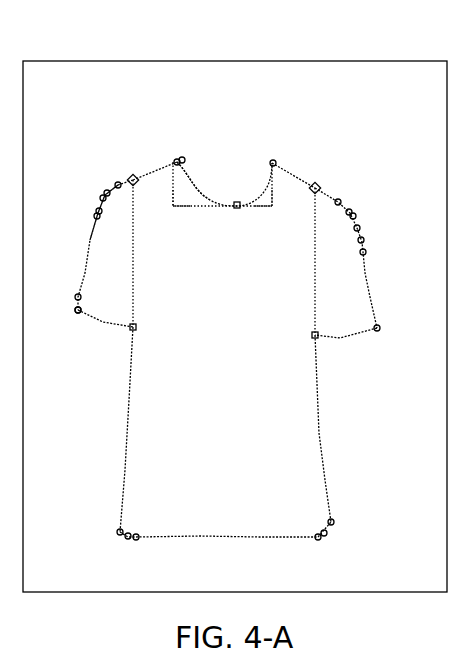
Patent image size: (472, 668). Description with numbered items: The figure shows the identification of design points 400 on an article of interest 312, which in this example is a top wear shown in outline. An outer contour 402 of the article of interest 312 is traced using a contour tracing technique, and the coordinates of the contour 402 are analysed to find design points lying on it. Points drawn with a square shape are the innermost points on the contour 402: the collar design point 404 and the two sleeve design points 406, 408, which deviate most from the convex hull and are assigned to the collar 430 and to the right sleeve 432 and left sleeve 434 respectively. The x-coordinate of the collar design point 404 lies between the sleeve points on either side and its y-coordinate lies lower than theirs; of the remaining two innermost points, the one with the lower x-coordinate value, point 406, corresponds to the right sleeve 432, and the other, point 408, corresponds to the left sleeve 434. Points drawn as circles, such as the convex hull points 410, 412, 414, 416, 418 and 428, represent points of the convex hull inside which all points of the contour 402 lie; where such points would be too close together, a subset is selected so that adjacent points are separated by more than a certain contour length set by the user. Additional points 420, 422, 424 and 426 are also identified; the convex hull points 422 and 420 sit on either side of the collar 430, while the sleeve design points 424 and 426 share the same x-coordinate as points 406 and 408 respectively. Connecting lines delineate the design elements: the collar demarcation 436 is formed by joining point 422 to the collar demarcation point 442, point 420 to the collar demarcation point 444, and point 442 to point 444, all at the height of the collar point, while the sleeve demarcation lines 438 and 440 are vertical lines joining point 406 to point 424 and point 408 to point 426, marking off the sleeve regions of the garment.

The design points 400 is at (303, 48).
The outer contour 402 is at (75, 278).
The collar design point 404 is at (237, 208).
The right sleeve design point 406 is at (135, 329).
The left sleeve design point 408 is at (313, 345).
The convex hull point 410 is at (380, 330).
The convex hull point 412 is at (365, 252).
The convex hull point 414 is at (97, 212).
The convex hull point 416 is at (76, 310).
The convex hull point 418 is at (117, 531).
The convex hull point beside collar 420 is at (176, 160).
The convex hull point beside collar 422 is at (273, 160).
The sleeve design point 424 is at (132, 179).
The sleeve design point 426 is at (317, 187).
The convex hull point 428 is at (333, 523).
The collar 430 is at (214, 183).
The right sleeve 432 is at (90, 334).
The left sleeve 434 is at (352, 349).
The collar demarcation 436 is at (188, 172).
The sleeve demarcation line 438 is at (133, 272).
The sleeve demarcation line 440 is at (315, 270).
The collar demarcation point 442 is at (278, 212).
The collar demarcation point 444 is at (168, 212).
The article of interest 312 is at (336, 438).